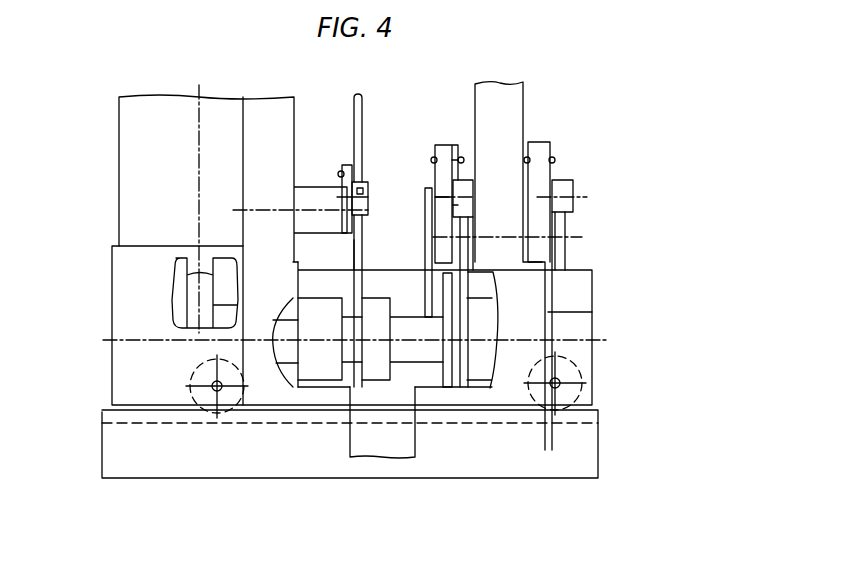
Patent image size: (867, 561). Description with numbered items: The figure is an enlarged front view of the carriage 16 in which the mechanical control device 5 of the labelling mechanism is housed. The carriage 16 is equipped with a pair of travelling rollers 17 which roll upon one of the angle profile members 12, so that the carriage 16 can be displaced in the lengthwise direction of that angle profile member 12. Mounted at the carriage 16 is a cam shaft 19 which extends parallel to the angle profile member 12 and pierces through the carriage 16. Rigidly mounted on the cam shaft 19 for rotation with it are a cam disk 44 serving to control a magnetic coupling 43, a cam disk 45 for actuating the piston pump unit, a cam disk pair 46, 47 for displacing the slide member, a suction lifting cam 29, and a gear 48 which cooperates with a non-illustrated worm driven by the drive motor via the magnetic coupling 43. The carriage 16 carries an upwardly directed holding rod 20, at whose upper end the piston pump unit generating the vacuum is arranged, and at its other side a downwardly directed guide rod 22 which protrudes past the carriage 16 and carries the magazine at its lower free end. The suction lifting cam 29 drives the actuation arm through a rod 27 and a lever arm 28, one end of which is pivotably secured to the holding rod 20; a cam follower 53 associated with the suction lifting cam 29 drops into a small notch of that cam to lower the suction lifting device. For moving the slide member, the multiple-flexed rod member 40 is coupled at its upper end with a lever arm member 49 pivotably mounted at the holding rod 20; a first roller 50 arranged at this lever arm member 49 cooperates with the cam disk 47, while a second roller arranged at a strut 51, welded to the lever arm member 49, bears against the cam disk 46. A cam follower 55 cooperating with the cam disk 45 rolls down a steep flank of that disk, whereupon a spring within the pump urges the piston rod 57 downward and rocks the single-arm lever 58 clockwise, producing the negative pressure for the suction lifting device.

The control device 5 is at (533, 113).
The angle profile member 12 is at (215, 468).
The carriage 16 is at (580, 282).
The travelling rollers 17 is at (190, 378).
The cam shaft 19 is at (407, 322).
The holding rod 20 is at (502, 90).
The guide rod 22 is at (372, 445).
The rod 27 is at (592, 312).
The lever arm 28 is at (533, 145).
The suction lifting cam 29 is at (558, 225).
The multiple-flexed rod member 40 is at (452, 168).
The magnetic coupling 43 is at (133, 197).
The cam disk 44 is at (295, 380).
The cam disk 45 is at (357, 253).
The cam disk 46 is at (447, 387).
The cam disk 47 is at (465, 387).
The gear 48 is at (187, 298).
The lever arm member 49 is at (456, 167).
The first roller 50 is at (467, 182).
The strut 51 is at (430, 215).
The cam follower 53 is at (568, 183).
The cam follower 55 is at (368, 192).
The piston rod 57 is at (362, 120).
The single-arm lever 58 is at (343, 165).